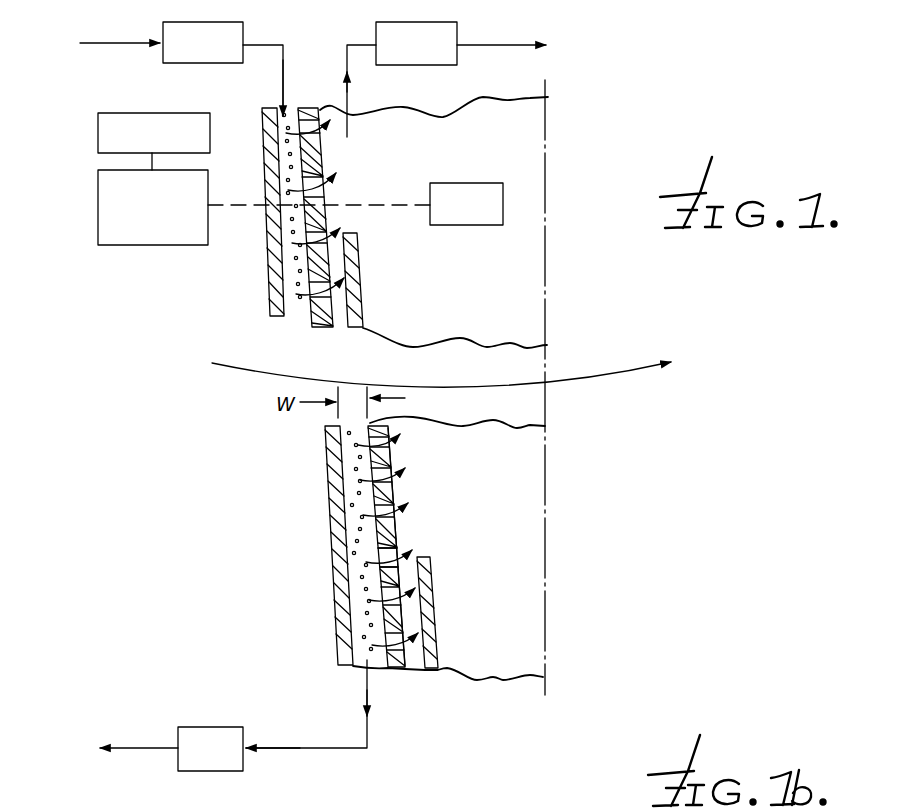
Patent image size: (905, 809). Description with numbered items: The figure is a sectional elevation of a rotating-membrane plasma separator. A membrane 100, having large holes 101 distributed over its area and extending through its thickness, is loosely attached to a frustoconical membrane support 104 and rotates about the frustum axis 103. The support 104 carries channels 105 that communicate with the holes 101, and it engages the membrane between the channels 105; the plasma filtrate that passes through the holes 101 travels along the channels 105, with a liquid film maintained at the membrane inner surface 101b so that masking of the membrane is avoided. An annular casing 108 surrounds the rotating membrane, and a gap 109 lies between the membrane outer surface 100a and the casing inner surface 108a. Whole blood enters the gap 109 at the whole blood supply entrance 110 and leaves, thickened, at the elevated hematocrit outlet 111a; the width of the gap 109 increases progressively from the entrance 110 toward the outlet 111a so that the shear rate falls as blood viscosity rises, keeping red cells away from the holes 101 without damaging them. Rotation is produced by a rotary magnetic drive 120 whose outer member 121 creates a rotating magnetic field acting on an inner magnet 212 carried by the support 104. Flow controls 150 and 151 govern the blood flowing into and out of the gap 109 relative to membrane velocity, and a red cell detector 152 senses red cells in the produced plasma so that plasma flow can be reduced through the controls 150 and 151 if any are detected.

The membrane 100 is at (396, 492).
The membrane outer surface 100a is at (380, 537).
The holes 101 is at (388, 460).
The membrane inner surface 101b is at (395, 533).
The frustum axis 103 is at (547, 455).
The membrane support 104 is at (362, 302).
The channels 105 is at (337, 253).
The annular casing 108 is at (338, 484).
The casing inner surface 108a is at (270, 270).
The gap 109 is at (300, 322).
The whole blood supply entrance 110 is at (287, 115).
The elevated hematocrit outlet 111a is at (358, 668).
The rotary magnetic drive 120 is at (117, 113).
The outer member 121 is at (264, 207).
The flow control 150 is at (181, 69).
The flow control 151 is at (208, 748).
The red cell detector 152 is at (527, 79).
The inner magnet 212 is at (458, 195).